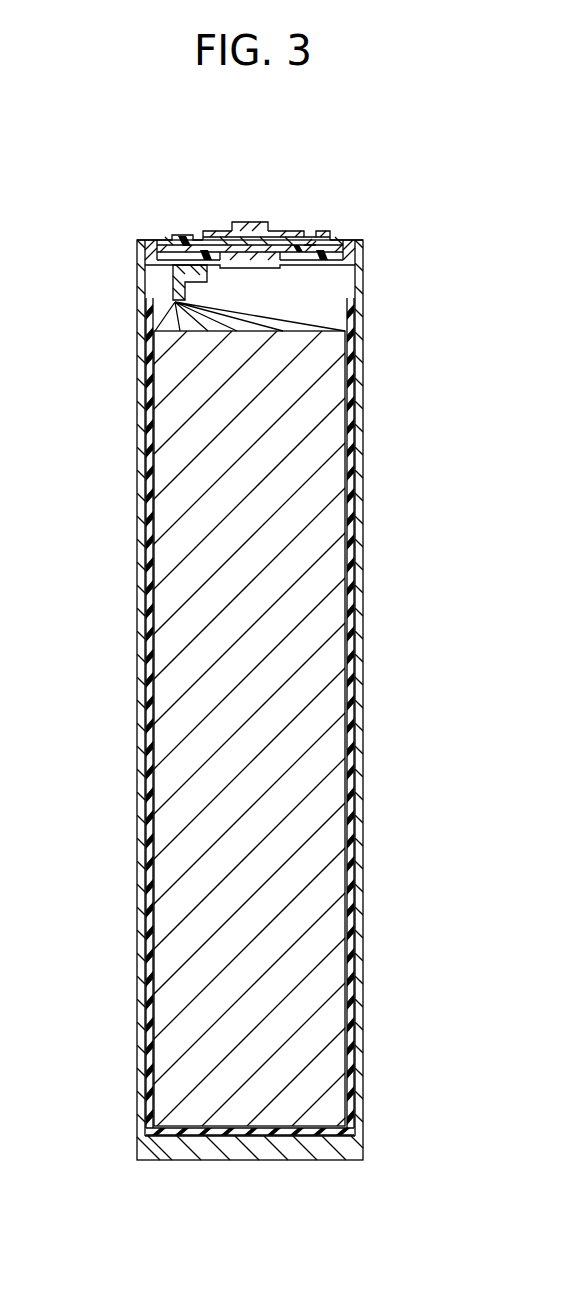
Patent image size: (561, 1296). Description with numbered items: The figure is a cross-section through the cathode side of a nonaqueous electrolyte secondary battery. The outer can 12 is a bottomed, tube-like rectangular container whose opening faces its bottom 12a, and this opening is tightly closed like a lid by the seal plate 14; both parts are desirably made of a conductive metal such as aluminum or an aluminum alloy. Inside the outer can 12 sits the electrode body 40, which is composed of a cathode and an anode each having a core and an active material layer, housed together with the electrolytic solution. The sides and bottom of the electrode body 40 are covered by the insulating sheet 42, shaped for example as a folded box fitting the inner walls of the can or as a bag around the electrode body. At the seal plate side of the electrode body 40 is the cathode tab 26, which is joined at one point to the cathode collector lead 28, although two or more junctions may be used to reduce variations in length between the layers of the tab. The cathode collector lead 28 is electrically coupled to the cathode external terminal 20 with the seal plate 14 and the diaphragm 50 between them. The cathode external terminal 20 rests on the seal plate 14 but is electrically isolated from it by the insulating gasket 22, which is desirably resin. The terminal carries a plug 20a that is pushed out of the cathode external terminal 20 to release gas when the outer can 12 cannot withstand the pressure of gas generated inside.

The outer can 12 is at (360, 789).
The bottom 12a is at (252, 1150).
The seal plate 14 is at (350, 241).
The cathode external terminal 20 is at (227, 237).
The plug 20a is at (253, 222).
The insulating gasket 22 is at (318, 234).
The cathode tab 26 is at (172, 304).
The cathode collector lead 28 is at (178, 271).
The electrode body 40 is at (196, 580).
The insulating sheet 42 is at (147, 1085).
The diaphragm 50 is at (219, 249).